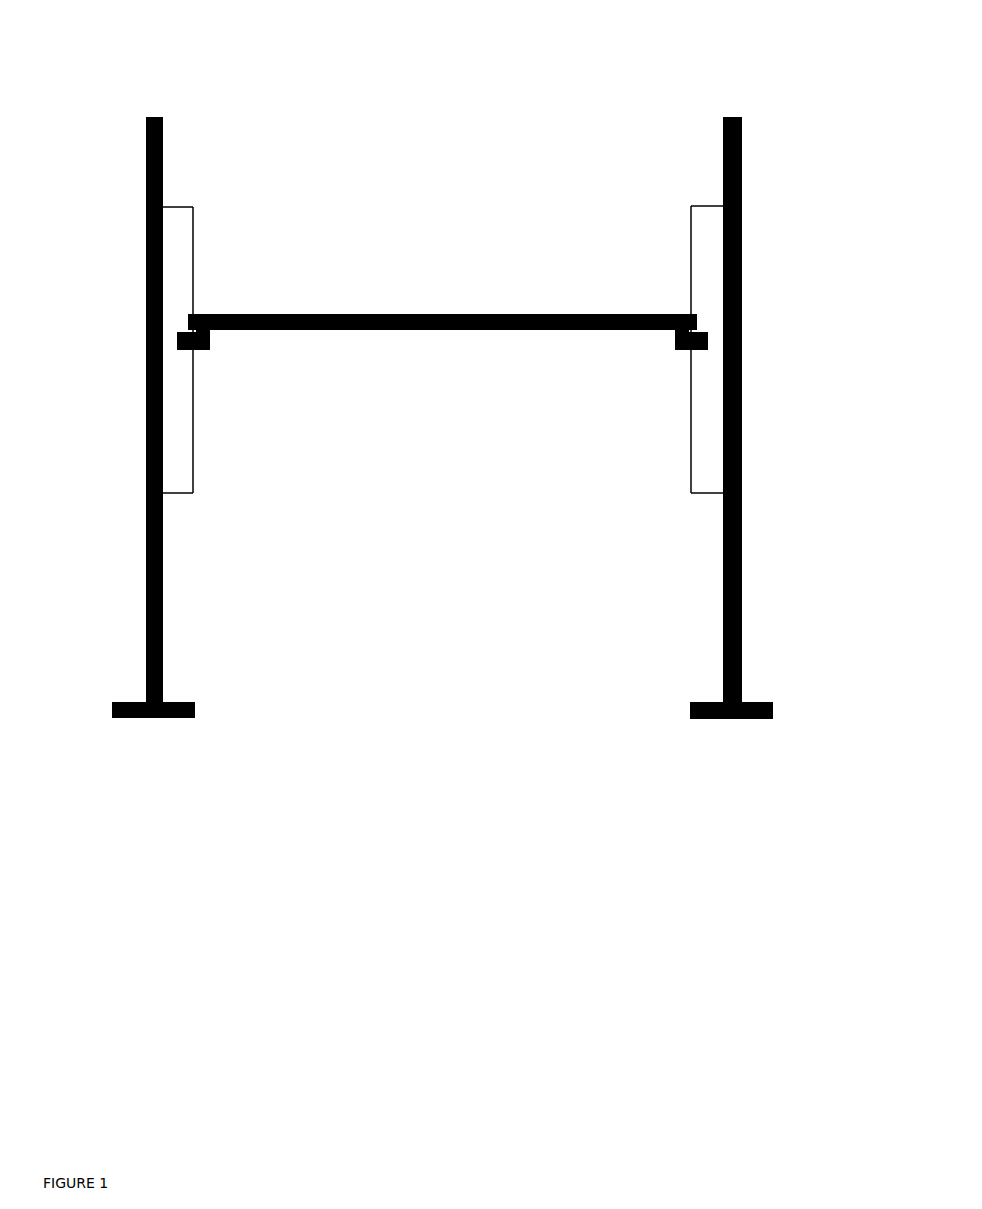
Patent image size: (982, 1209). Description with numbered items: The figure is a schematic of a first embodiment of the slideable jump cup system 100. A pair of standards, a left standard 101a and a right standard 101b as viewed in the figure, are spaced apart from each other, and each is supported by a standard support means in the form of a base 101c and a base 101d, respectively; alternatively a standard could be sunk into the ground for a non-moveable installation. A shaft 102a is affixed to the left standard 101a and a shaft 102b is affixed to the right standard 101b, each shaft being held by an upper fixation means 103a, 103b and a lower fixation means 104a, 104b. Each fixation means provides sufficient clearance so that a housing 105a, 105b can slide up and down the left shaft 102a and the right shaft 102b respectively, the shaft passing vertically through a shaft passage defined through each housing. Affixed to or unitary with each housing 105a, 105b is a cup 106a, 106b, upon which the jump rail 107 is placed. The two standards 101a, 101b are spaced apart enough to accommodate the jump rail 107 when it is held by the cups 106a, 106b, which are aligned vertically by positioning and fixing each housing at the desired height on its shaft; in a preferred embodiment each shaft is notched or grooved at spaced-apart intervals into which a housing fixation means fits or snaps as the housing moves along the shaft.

The slideable jump cup system 100 is at (636, 67).
The left standard 101a is at (163, 112).
The right standard 101b is at (746, 110).
The base 101c is at (192, 694).
The base 101d is at (775, 694).
The shaft 102a is at (194, 237).
The shaft 102b is at (690, 237).
The upper fixation means 103a is at (176, 205).
The upper fixation means 103b is at (704, 206).
The lower fixation means 104a is at (176, 495).
The lower fixation means 104b is at (709, 497).
The housing 105a is at (211, 348).
The housing 105b is at (674, 348).
The cup 106a is at (212, 334).
The cup 106b is at (661, 333).
The jump rail 107 is at (378, 312).